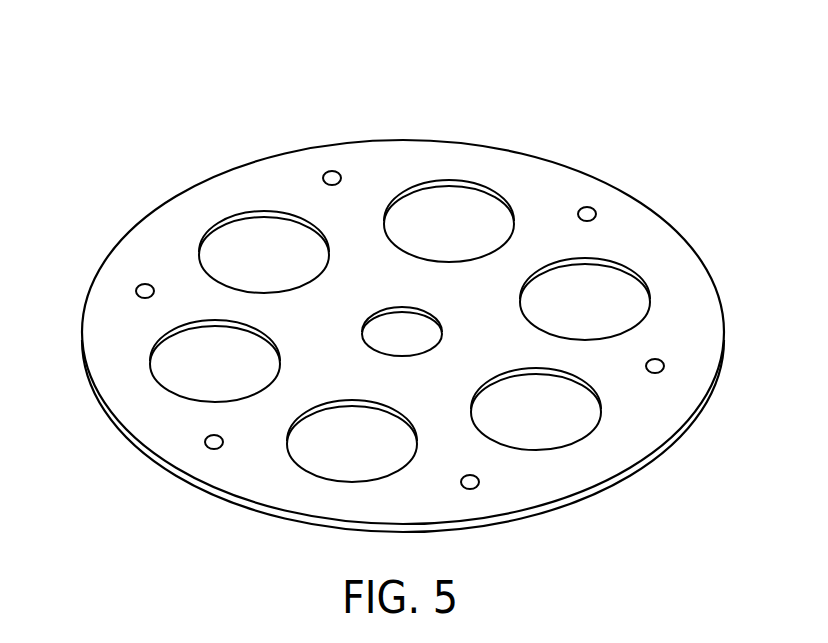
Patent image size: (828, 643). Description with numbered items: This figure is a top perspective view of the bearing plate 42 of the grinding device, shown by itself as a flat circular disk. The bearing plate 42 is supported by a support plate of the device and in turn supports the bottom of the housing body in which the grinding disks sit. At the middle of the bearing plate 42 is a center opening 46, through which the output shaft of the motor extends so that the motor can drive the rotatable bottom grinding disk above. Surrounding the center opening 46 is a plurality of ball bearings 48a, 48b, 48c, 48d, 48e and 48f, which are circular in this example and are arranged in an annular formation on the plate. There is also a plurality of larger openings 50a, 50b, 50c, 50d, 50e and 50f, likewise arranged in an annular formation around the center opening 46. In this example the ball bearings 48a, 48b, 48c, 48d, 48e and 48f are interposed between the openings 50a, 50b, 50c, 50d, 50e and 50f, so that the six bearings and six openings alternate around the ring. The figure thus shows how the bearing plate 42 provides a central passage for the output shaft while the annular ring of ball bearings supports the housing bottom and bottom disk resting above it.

The bearing plate 42 is at (156, 95).
The center opening 46 is at (383, 333).
The ball bearing 48a is at (331, 172).
The ball bearing 48b is at (145, 288).
The ball bearing 48c is at (212, 440).
The ball bearing 48d is at (471, 481).
The ball bearing 48e is at (657, 366).
The ball bearing 48f is at (588, 212).
The opening 50a is at (246, 243).
The opening 50b is at (193, 368).
The opening 50c is at (345, 452).
The opening 50d is at (553, 422).
The opening 50e is at (608, 298).
The opening 50f is at (450, 215).